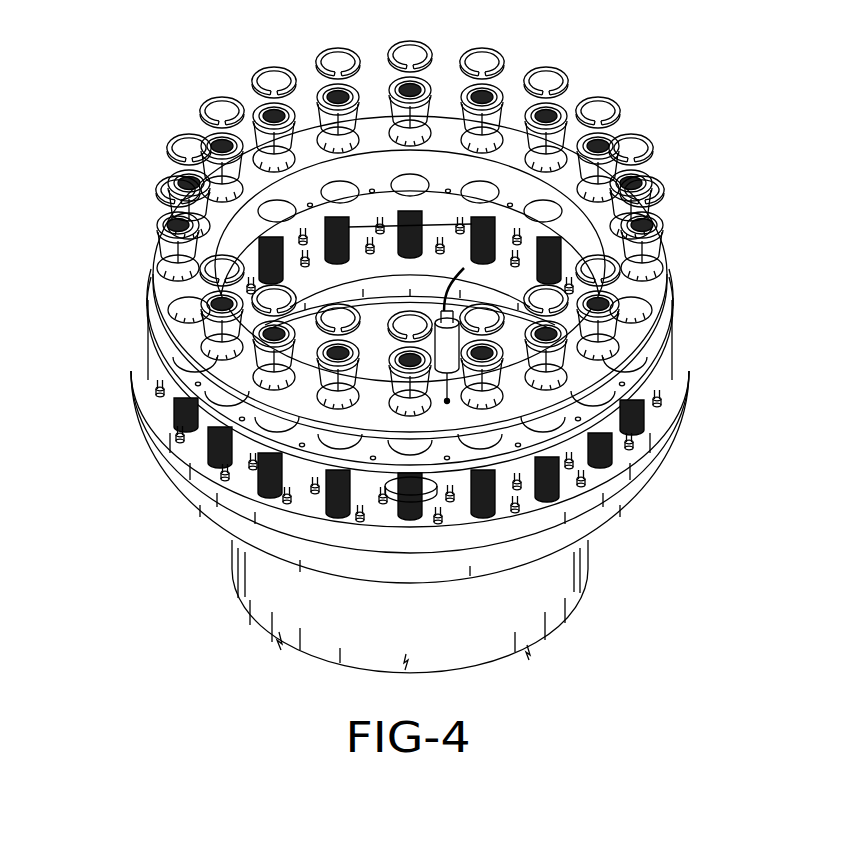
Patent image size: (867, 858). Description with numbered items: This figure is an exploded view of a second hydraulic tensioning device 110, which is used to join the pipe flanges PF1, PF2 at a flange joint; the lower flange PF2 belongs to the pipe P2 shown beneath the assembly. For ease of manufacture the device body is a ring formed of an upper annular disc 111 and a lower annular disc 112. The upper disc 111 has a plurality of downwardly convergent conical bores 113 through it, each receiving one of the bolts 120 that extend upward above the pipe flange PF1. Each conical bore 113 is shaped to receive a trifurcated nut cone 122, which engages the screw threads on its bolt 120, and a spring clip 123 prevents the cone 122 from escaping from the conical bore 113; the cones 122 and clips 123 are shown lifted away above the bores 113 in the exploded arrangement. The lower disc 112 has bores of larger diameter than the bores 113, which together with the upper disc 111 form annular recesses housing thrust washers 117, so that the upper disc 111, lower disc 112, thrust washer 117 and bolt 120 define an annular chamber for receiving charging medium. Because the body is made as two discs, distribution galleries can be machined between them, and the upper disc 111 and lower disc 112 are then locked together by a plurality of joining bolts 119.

The hydraulic tensioning device 110 is at (152, 296).
The upper annular disc 111 is at (666, 286).
The lower annular disc 112 is at (666, 344).
The conical bore 113 is at (287, 156).
The thrust washer 117 is at (396, 499).
The joining bolt 119 is at (628, 448).
The bolt 120 is at (560, 491).
The trifurcated nut cone 122 is at (255, 103).
The spring clip 123 is at (263, 64).
The pipe flange PF1 is at (617, 488).
The pipe flange PF2 is at (580, 534).
The pipe P2 is at (257, 631).